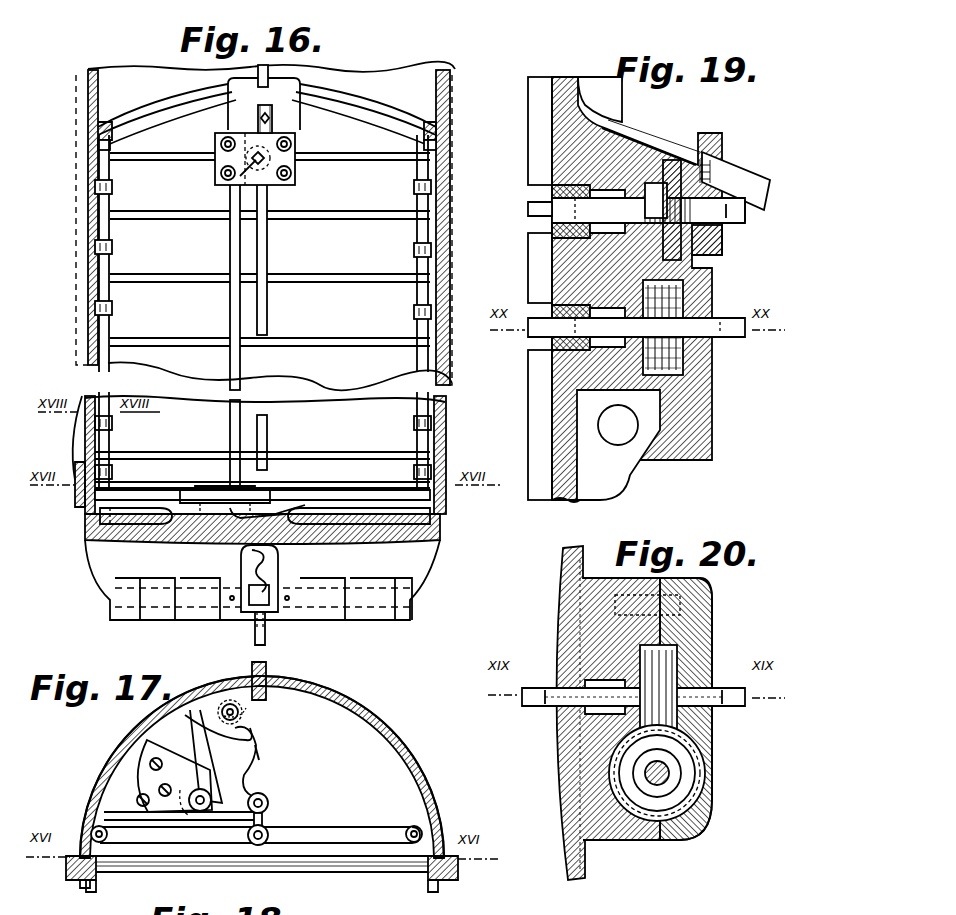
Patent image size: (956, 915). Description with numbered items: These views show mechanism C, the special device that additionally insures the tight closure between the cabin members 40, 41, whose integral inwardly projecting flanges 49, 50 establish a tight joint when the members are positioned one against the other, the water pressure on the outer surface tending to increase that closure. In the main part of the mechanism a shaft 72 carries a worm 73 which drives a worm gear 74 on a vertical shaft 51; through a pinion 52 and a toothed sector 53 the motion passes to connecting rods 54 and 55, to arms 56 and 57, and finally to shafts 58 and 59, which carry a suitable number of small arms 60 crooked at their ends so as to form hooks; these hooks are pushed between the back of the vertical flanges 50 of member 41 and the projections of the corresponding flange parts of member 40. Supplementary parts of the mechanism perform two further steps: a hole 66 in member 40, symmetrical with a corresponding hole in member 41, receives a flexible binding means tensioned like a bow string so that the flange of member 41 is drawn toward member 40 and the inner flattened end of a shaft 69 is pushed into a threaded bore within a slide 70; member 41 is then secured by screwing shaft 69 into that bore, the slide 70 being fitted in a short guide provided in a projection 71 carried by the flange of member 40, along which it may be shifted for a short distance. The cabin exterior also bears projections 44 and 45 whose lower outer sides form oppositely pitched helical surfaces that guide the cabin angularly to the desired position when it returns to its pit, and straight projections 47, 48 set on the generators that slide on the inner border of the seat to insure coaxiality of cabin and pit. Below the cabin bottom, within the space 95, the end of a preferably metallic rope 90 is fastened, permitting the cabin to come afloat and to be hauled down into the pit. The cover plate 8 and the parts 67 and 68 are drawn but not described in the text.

In FIG. 19, the cover plate 8 is at (590, 122).
In FIG. 19, the cabin member 40 is at (565, 97).
In FIG. 19, the cabin member 41 is at (560, 150).
In FIG. 17, the projection 44 is at (82, 880).
In FIG. 17, the projection 45 is at (66, 866).
In FIG. 17, the straight projection 47 is at (252, 665).
In FIG. 17, the straight projection 48 is at (458, 868).
In FIG. 17, the flange 49 is at (92, 876).
In FIG. 17, the flange 50 is at (90, 838).
In FIG. 16, the vertical shaft 51 is at (232, 300).
In FIG. 17, the vertical shaft 51 is at (240, 710).
In FIG. 20, the vertical shaft 51 is at (665, 780).
In FIG. 17, the pinion 52 is at (240, 718).
In FIG. 17, the toothed sector 53 is at (257, 750).
In FIG. 16, the connecting rod 54 is at (272, 496).
In FIG. 17, the connecting rod 54 is at (270, 810).
In FIG. 16, the connecting rod 55 is at (300, 520).
In FIG. 17, the connecting rod 55 is at (270, 824).
In FIG. 16, the arm 56 is at (166, 508).
In FIG. 17, the arm 56 is at (176, 860).
In FIG. 16, the arm 57 is at (355, 508).
In FIG. 17, the arm 57 is at (344, 835).
In FIG. 16, the shaft 58 is at (100, 295).
In FIG. 17, the shaft 58 is at (104, 828).
In FIG. 16, the shaft 59 is at (430, 305).
In FIG. 17, the shaft 59 is at (414, 830).
In FIG. 16, the small arm 60 is at (113, 188).
In FIG. 19, the hole 66 is at (620, 430).
In FIG. 16, the hinge block 67 is at (102, 122).
In FIG. 16, the pin 68 is at (112, 136).
In FIG. 16, the shaft 69 is at (270, 118).
In FIG. 19, the shaft 69 is at (570, 210).
In FIG. 16, the slide 70 is at (258, 128).
In FIG. 19, the slide 70 is at (722, 234).
In FIG. 16, the projection 71 is at (257, 110).
In FIG. 19, the projection 71 is at (735, 178).
In FIG. 16, the shaft 72 is at (238, 178).
In FIG. 19, the shaft 72 is at (705, 322).
In FIG. 20, the shaft 72 is at (705, 700).
In FIG. 19, the worm 73 is at (660, 305).
In FIG. 20, the worm 73 is at (660, 665).
In FIG. 20, the worm gear 74 is at (683, 760).
In FIG. 16, the rope 90 is at (266, 638).
In FIG. 16, the space 95 is at (244, 575).